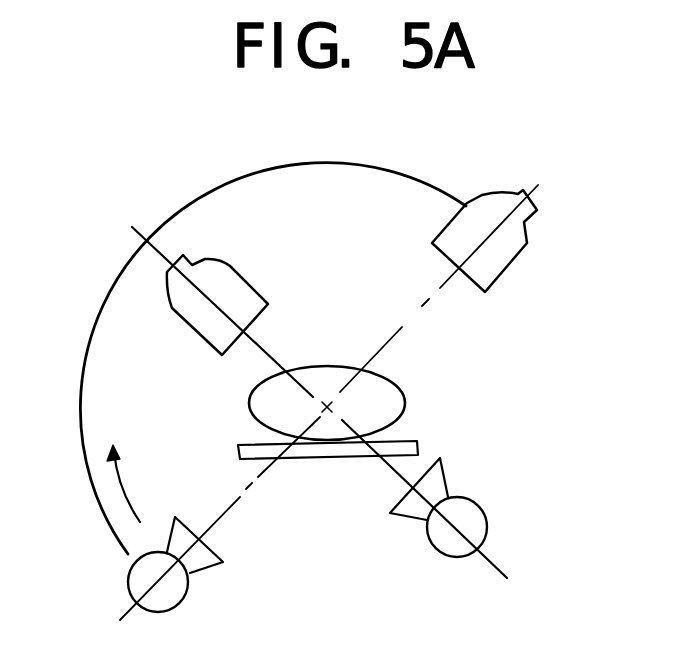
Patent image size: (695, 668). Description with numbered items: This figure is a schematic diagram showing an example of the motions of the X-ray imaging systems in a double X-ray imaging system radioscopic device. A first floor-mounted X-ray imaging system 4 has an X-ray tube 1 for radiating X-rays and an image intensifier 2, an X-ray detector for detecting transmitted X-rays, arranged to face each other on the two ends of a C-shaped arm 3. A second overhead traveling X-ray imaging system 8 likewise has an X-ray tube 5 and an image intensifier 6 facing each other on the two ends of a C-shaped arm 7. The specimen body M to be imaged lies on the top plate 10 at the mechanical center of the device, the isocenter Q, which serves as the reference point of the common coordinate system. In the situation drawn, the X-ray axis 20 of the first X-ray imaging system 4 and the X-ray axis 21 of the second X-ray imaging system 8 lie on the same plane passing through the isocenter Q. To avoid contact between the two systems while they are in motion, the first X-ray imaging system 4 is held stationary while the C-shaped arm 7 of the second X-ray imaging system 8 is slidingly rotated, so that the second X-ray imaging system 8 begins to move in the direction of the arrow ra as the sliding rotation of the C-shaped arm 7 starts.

The X-ray tube 1 is at (477, 530).
The image intensifier 2 is at (230, 282).
The C-shaped arm 3 is at (268, 360).
The first X-ray imaging system 4 is at (469, 477).
The X-ray tube 5 is at (173, 588).
The image intensifier 6 is at (518, 236).
The C-shaped arm 7 is at (400, 170).
The second X-ray imaging system 8 is at (140, 567).
The top plate 10 is at (313, 453).
The X-ray axis 20 is at (403, 477).
The X-ray axis 21 is at (400, 325).
The specimen body M is at (401, 379).
The isocenter Q is at (325, 398).
The arrow ra is at (128, 489).